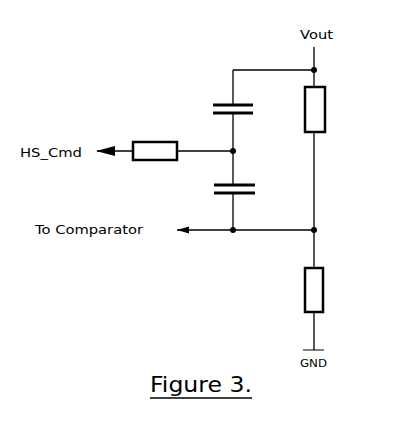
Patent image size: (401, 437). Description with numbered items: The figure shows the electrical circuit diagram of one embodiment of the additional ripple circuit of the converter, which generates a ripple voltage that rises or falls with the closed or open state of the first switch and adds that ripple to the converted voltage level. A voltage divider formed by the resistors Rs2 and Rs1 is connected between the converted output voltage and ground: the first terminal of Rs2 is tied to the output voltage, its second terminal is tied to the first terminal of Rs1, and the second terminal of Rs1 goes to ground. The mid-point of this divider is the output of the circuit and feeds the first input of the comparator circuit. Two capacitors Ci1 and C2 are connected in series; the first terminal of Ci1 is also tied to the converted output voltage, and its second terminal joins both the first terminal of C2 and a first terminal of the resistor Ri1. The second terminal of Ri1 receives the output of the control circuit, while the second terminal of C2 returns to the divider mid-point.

The resistor Ri1 is at (155, 139).
The capacitor Ci1 is at (247, 112).
The capacitor C2 is at (246, 191).
The resistor Rs2 is at (331, 109).
The resistor Rs1 is at (328, 290).